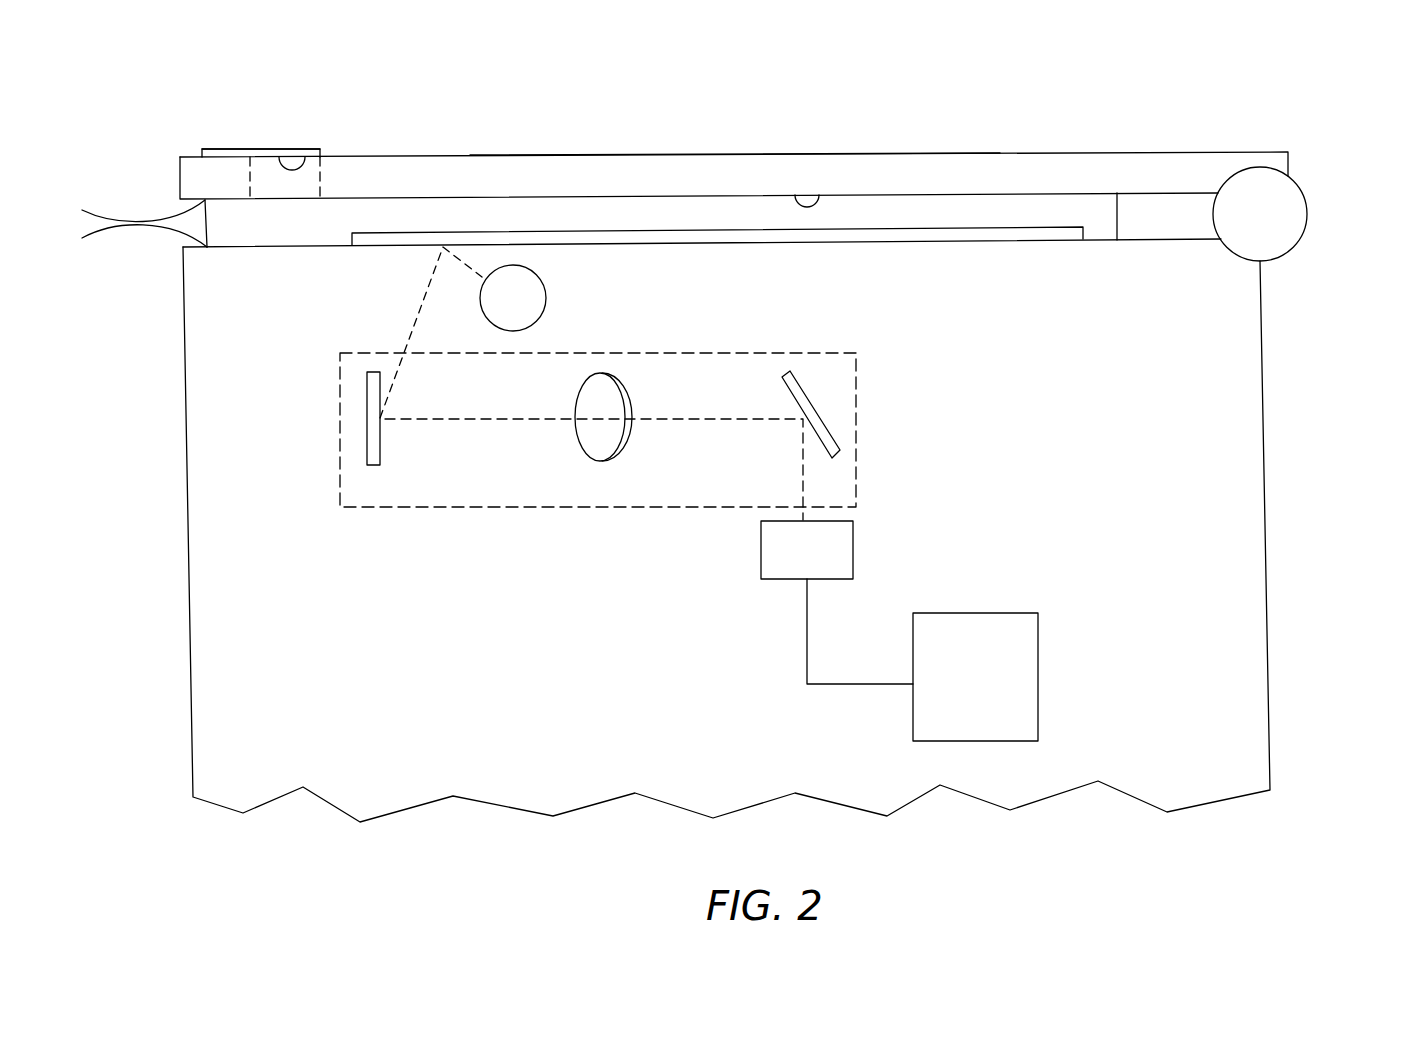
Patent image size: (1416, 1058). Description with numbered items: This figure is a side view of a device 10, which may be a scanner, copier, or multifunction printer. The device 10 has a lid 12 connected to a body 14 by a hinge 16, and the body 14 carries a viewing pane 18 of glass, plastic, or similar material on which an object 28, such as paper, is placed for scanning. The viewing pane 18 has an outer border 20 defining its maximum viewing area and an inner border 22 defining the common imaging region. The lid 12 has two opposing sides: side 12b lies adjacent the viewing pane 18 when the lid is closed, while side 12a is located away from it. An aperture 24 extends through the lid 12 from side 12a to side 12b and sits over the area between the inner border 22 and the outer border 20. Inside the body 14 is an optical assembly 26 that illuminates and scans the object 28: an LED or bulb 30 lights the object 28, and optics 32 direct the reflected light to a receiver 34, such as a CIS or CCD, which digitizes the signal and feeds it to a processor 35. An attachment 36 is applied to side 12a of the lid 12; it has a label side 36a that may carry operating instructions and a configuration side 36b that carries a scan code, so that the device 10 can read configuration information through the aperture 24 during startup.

The device 10 is at (1320, 105).
The lid 12 is at (521, 147).
The side of lid 12a is at (678, 153).
The side of lid 12b is at (826, 197).
The body 14 is at (1074, 465).
The hinge 16 is at (1267, 215).
The viewing pane 18 is at (1028, 242).
The outer border 20 is at (217, 238).
The inner border 22 is at (352, 240).
The aperture 24 is at (322, 177).
The optical assembly 26 is at (411, 553).
The object 28 is at (987, 227).
The LED or bulb 30 is at (532, 287).
The optics 32 is at (856, 395).
The receiver 34 is at (761, 563).
The processor 35 is at (1038, 640).
The attachment 36 is at (215, 143).
The label side 36a is at (238, 148).
The configuration side 36b is at (296, 161).